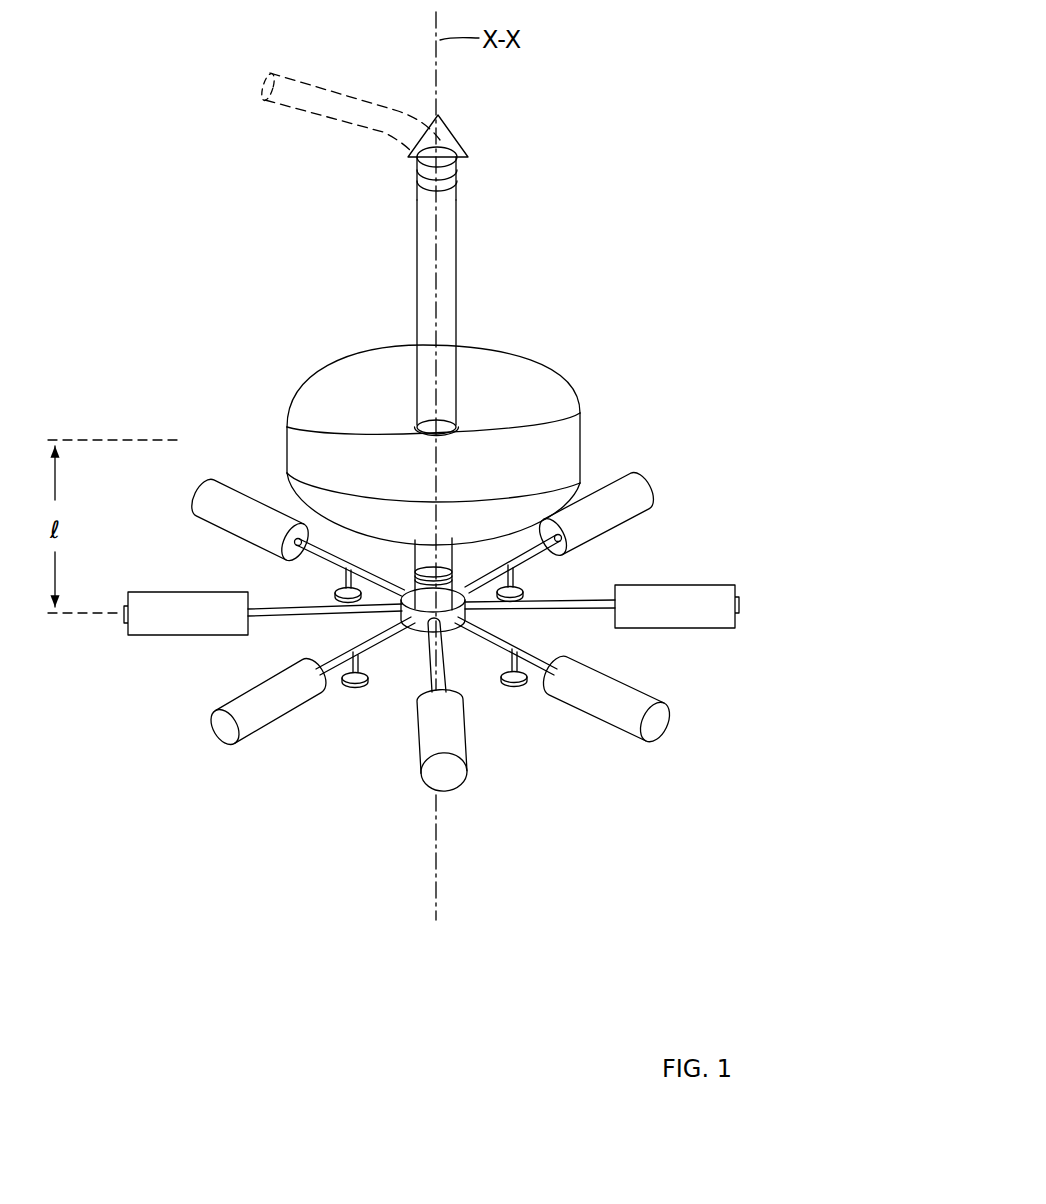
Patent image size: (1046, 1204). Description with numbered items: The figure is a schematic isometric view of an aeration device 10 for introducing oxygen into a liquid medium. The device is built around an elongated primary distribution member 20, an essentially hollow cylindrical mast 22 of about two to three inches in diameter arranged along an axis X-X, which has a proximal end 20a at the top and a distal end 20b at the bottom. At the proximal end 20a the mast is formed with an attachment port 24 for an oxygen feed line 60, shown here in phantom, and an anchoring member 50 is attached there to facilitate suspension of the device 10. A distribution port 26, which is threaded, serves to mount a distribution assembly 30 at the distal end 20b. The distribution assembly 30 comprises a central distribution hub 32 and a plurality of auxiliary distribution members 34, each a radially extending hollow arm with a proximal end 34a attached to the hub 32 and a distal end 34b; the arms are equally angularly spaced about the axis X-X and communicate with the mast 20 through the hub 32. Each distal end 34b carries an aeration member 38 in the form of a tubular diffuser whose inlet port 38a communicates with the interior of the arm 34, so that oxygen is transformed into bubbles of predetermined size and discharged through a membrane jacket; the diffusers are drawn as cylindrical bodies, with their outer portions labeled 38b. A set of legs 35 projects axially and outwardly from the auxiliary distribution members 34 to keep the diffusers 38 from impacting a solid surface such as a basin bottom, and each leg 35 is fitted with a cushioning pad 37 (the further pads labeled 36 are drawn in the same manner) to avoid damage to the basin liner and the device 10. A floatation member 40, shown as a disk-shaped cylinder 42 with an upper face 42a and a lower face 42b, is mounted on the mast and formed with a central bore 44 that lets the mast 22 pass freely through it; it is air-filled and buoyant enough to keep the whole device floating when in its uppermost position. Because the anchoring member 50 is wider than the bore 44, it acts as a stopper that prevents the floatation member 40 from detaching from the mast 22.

The aeration device 10 is at (725, 262).
The primary distribution member 20 is at (410, 272).
The proximal end 20a is at (417, 181).
The distal end 20b is at (600, 497).
The mast 22 is at (455, 229).
The attachment port 24 is at (458, 163).
The distribution port 26 is at (282, 554).
The distribution assembly 30 is at (579, 580).
The central distribution hub 32 is at (423, 633).
The auxiliary distribution member 34 is at (563, 610).
The proximal end 34a is at (393, 621).
The distal end 34b is at (327, 670).
The leg 35 is at (490, 667).
The foot pad 36 is at (335, 592).
The cushioning pad 37 is at (518, 686).
The aeration member 38 is at (217, 647).
The inlet port 38a is at (615, 600).
The inclined weight 38b is at (260, 717).
The floatation member 40 is at (593, 462).
The disk 42 is at (548, 435).
The top face of disk 42a is at (323, 392).
The bottom face of disk 42b is at (287, 502).
The central bore 44 is at (456, 430).
The anchoring member 50 is at (472, 119).
The oxygen feed line 60 is at (285, 92).